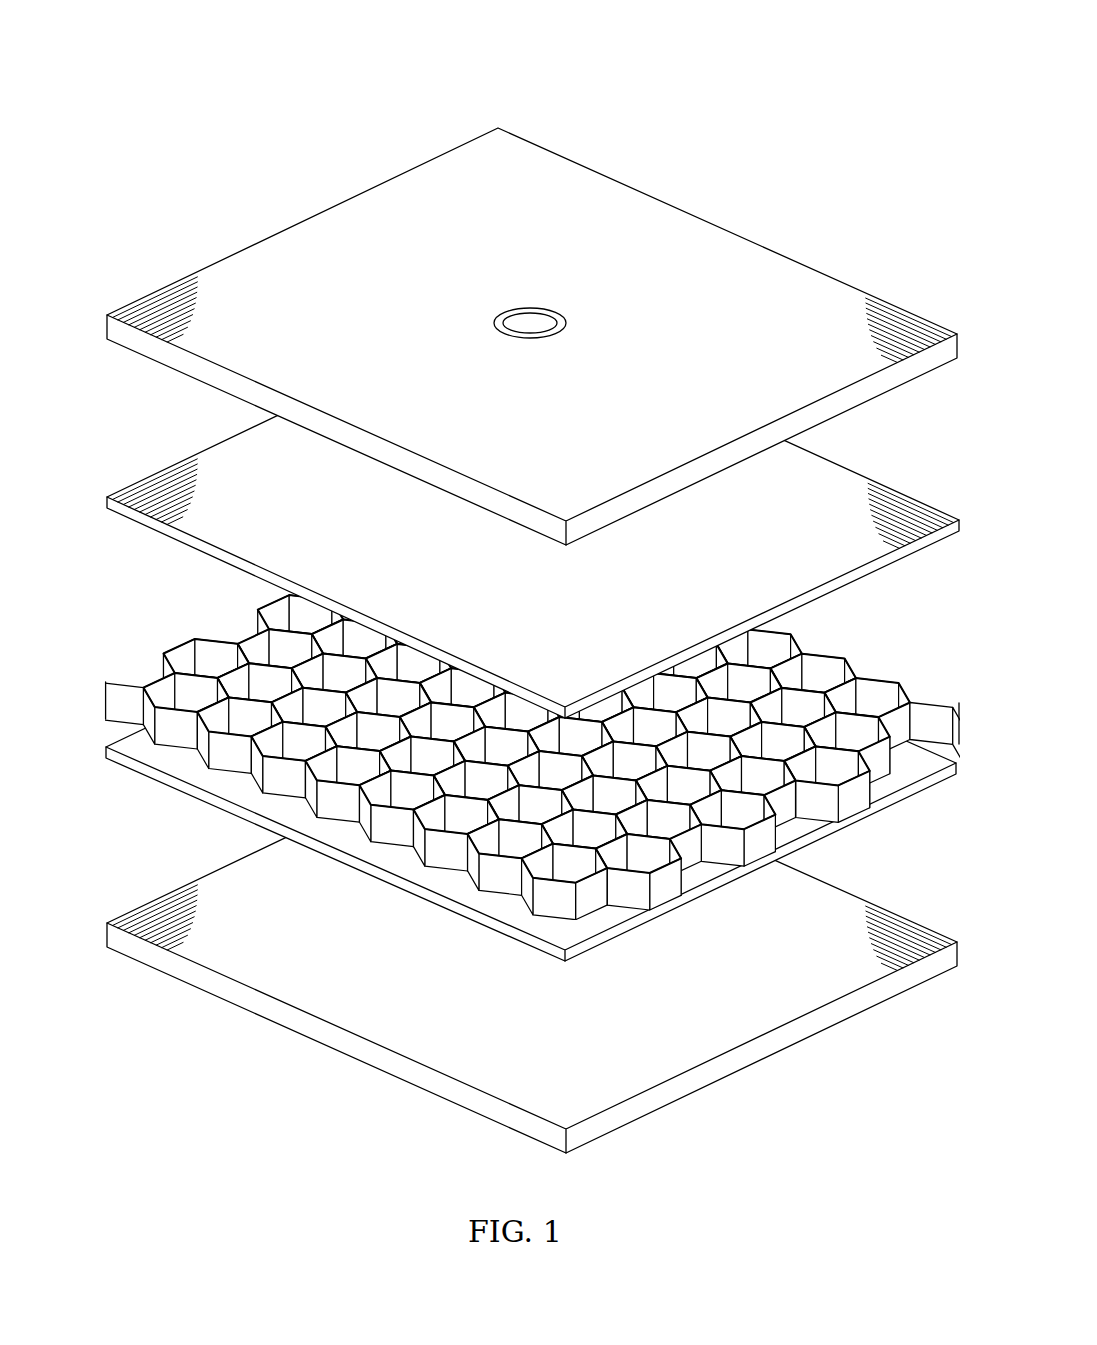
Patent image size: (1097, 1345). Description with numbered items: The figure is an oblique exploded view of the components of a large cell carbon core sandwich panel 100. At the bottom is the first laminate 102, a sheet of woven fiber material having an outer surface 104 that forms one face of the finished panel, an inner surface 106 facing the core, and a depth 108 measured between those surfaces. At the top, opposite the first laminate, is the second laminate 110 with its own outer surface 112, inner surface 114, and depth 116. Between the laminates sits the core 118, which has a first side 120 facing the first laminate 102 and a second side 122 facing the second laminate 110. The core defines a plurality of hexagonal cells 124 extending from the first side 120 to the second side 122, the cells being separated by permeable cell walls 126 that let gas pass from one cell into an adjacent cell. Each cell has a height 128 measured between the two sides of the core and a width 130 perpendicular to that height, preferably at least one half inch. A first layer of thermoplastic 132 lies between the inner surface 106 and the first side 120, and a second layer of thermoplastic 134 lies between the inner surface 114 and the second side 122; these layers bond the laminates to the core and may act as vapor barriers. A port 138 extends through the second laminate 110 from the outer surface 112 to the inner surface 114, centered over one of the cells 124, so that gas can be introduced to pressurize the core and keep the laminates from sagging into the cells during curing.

The panel 100 is at (693, 72).
The first laminate 102 is at (501, 944).
The outer surface 104 is at (501, 944).
The inner surface 106 is at (501, 944).
The depth 108 is at (56, 899).
The second laminate 110 is at (504, 336).
The outer surface 112 is at (504, 336).
The inner surface 114 is at (504, 336).
The depth 116 is at (504, 336).
The core 118 is at (504, 742).
The first side 120 is at (504, 719).
The second side 122 is at (504, 742).
The cells 124 is at (504, 742).
The cell walls 126 is at (504, 742).
The height 128 is at (504, 719).
The width 130 is at (348, 883).
The first layer of thermoplastic 132 is at (901, 792).
The second layer of thermoplastic 134 is at (873, 486).
The port 138 is at (547, 300).